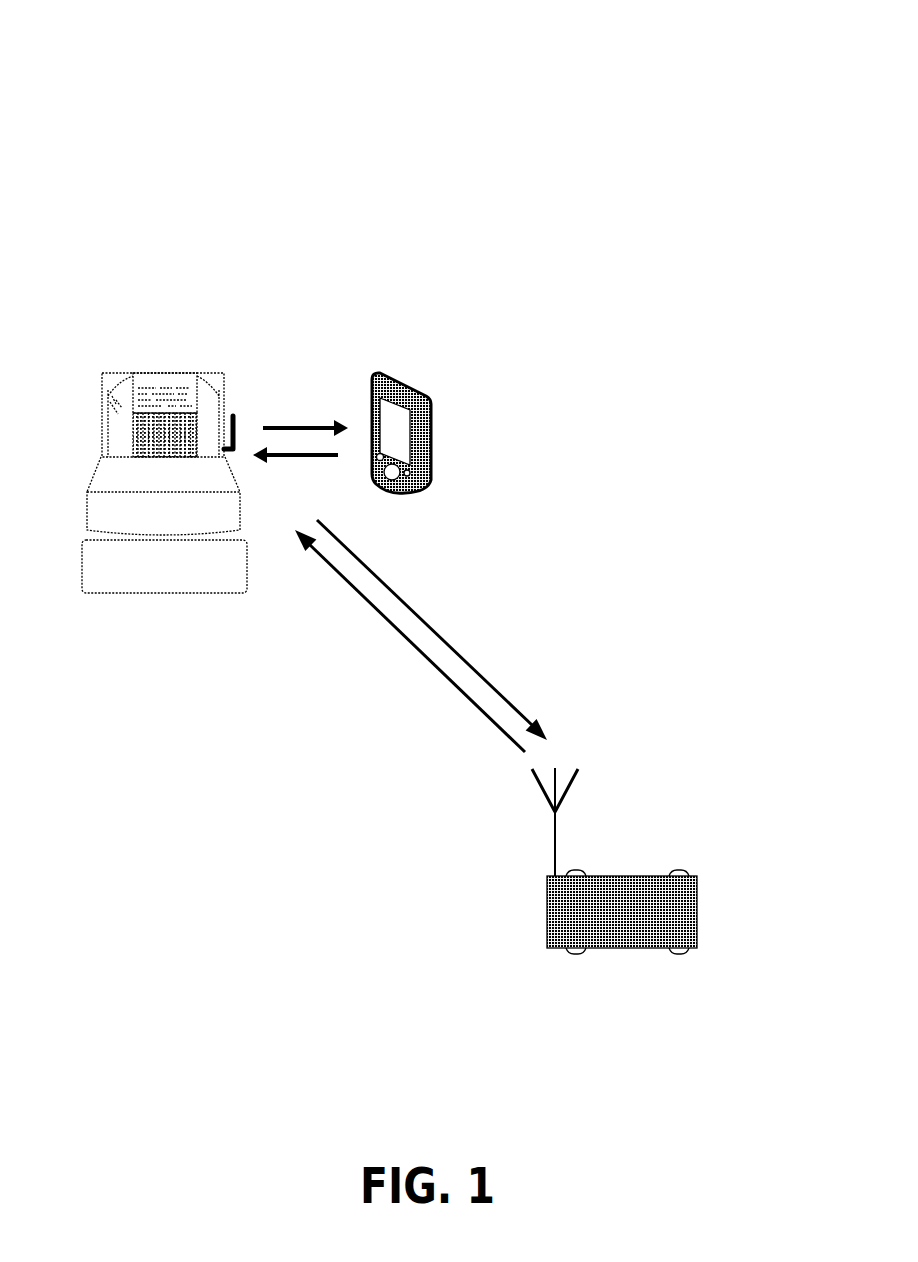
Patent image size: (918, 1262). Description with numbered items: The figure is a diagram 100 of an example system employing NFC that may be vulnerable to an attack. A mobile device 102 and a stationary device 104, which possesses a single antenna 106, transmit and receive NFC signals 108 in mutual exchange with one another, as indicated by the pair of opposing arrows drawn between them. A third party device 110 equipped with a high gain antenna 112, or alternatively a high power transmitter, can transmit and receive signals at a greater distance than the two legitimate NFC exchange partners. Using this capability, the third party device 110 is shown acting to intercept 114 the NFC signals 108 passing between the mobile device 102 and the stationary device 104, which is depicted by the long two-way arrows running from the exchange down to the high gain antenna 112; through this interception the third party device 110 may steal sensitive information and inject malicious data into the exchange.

The diagram 100 is at (717, 62).
The mobile device 102 is at (432, 370).
The stationary device 104 is at (128, 350).
The single antenna 106 is at (246, 400).
The NFC signals 108 is at (298, 493).
The third party device 110 is at (700, 842).
The high gain antenna 112 is at (513, 812).
The intercept 114 is at (476, 613).